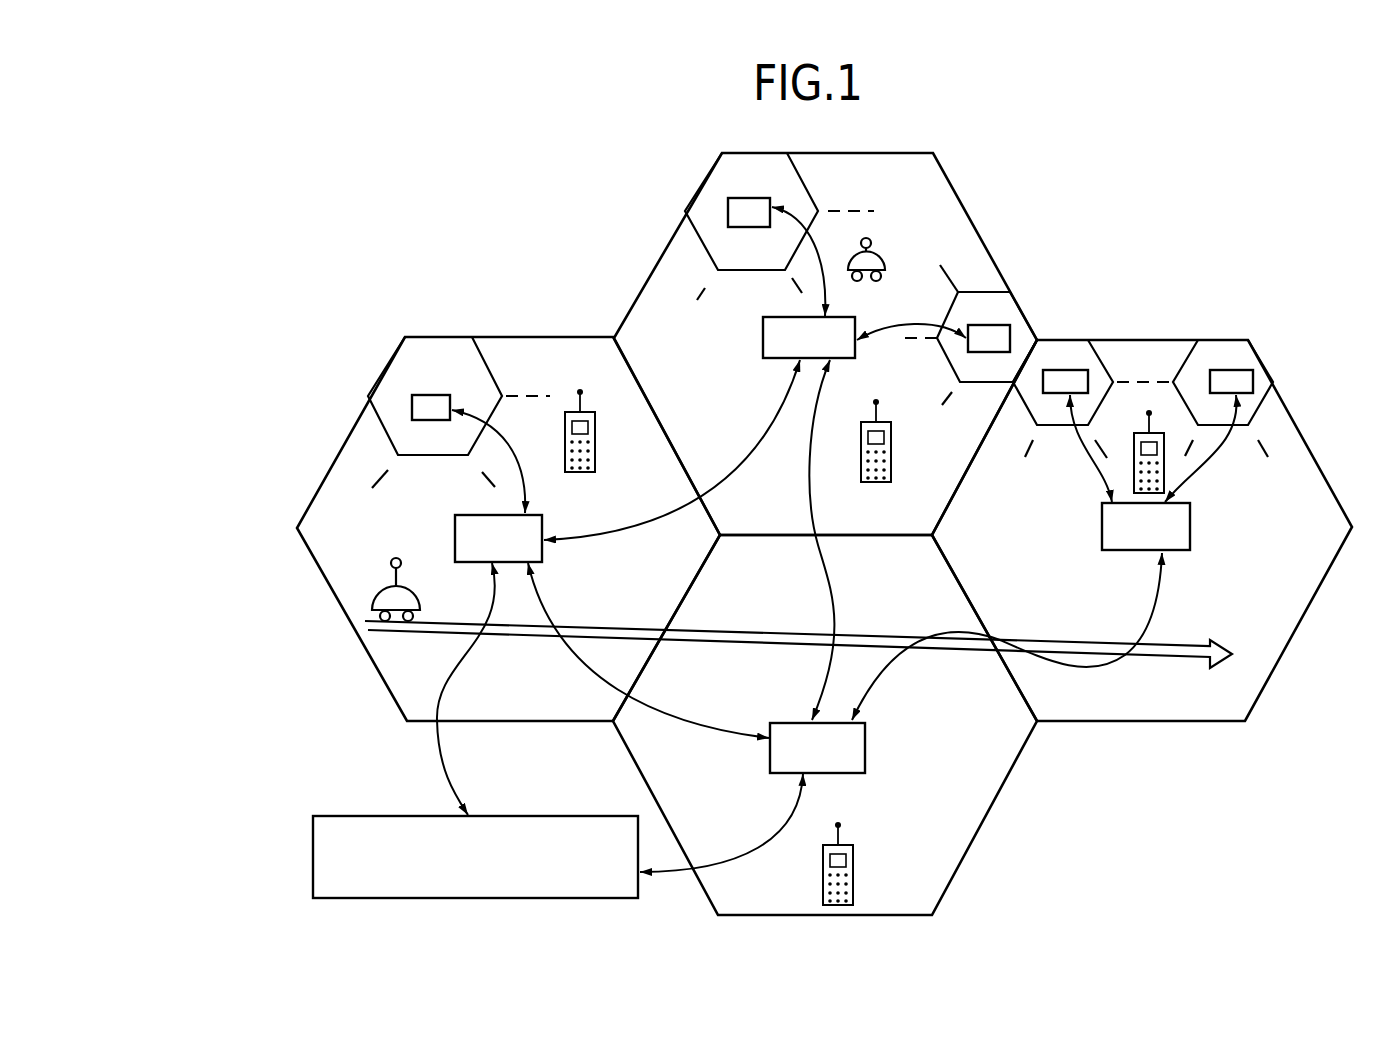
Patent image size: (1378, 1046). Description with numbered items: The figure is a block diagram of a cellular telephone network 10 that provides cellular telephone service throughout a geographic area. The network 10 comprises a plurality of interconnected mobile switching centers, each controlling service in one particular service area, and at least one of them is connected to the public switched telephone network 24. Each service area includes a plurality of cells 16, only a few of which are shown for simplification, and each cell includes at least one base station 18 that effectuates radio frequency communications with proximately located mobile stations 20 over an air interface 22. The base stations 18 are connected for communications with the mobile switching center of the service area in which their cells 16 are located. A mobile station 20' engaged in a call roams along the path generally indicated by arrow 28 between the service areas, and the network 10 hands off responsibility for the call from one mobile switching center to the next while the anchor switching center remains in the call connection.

The cellular telephone network 10 is at (283, 777).
The cell 16 is at (489, 368).
The base station 18 is at (441, 395).
The mobile station 20 is at (864, 571).
The mobile station 20' is at (386, 586).
The air interface 22 is at (1200, 388).
The public switched telephone network 24 is at (576, 816).
The arrow 28 is at (880, 638).